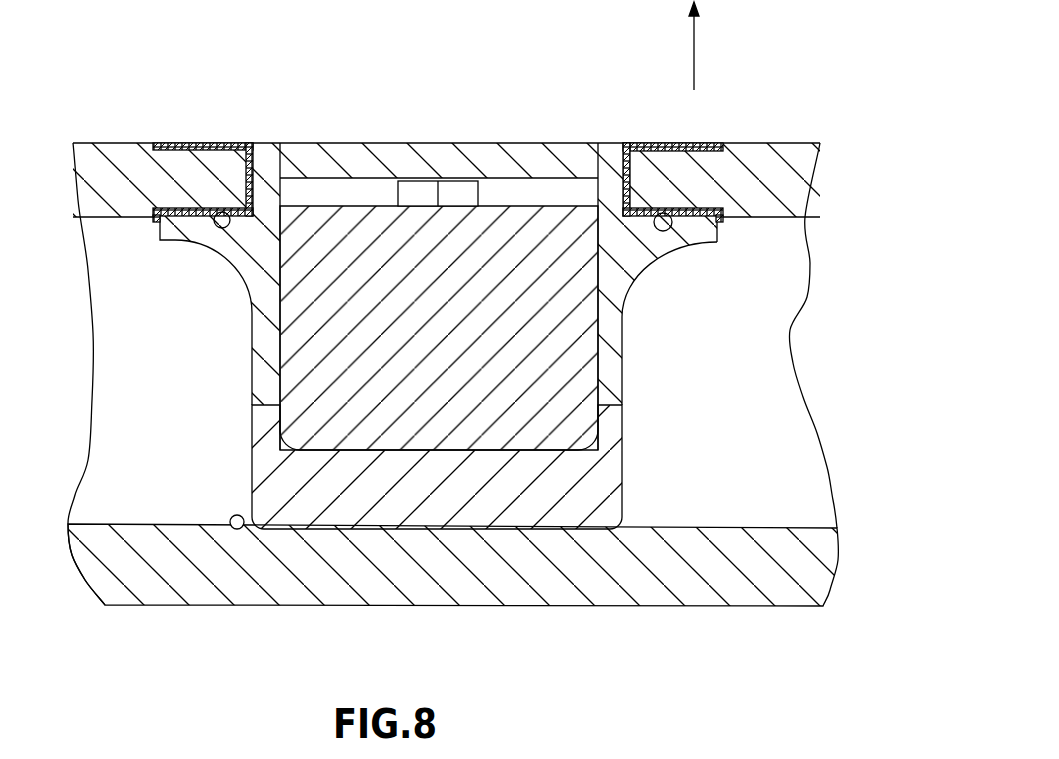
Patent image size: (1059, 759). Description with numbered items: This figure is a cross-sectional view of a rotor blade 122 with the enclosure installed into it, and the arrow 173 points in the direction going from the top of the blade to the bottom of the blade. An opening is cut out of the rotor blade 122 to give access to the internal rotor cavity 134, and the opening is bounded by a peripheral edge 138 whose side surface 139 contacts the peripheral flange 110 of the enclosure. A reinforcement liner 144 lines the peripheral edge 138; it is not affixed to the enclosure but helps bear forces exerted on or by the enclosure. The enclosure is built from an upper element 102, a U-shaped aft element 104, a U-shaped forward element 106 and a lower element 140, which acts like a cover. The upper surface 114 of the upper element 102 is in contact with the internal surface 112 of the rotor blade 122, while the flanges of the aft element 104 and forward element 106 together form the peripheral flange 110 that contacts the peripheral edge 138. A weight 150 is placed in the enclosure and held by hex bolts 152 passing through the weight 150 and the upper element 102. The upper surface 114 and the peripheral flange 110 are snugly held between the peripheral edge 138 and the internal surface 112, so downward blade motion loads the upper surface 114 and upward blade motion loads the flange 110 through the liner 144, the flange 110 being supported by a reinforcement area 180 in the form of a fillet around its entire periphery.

The upper element 102 is at (627, 487).
The aft element 104 is at (252, 360).
The forward element 106 is at (623, 340).
The peripheral flange 110 is at (149, 195).
The internal surface 112 is at (232, 530).
The upper surface 114 is at (363, 558).
The rotor blade 122 is at (128, 608).
The internal rotor cavity 134 is at (151, 498).
The peripheral edge 138 is at (223, 147).
The side surface 139 is at (203, 207).
The lower element 140 is at (388, 142).
The reinforcement liner 144 is at (247, 145).
The weight 150 is at (350, 207).
The hex bolts 152 is at (453, 180).
The direction indicator 173 is at (695, 43).
The reinforcement area 180 is at (223, 260).